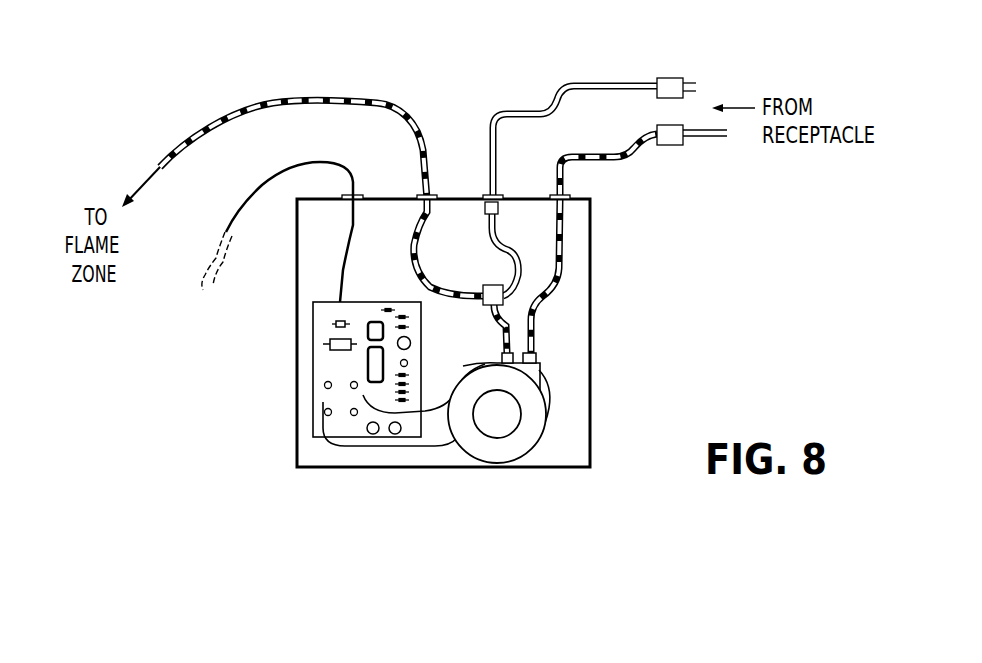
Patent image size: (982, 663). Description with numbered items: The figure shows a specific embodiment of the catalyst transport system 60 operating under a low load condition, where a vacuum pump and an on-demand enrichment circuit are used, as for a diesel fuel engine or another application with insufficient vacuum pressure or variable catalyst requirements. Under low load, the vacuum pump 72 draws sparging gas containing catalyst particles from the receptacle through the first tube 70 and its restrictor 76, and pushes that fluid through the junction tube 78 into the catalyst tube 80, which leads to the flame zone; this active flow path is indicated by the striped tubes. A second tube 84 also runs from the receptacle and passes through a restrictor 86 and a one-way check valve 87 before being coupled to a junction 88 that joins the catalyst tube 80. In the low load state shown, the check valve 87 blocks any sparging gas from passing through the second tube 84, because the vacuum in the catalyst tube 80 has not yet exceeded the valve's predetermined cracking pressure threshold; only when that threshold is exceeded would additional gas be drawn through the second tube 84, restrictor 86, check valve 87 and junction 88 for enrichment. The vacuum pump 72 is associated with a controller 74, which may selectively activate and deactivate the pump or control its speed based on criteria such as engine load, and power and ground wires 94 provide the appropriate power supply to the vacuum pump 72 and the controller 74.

The fuel delivery and ignition assembly 60 is at (425, 58).
The first tube 70 is at (640, 142).
The vacuum pump 72 is at (500, 448).
The controller 74 is at (332, 367).
The restrictor 76 is at (657, 125).
The junction tube 78 is at (490, 328).
The catalyst tube 80 is at (312, 104).
The second tube 84 is at (597, 82).
The restrictor 86 is at (664, 78).
The one-way check valve 87 is at (483, 208).
The junction 88 is at (483, 290).
The power and ground wires 94 is at (272, 243).